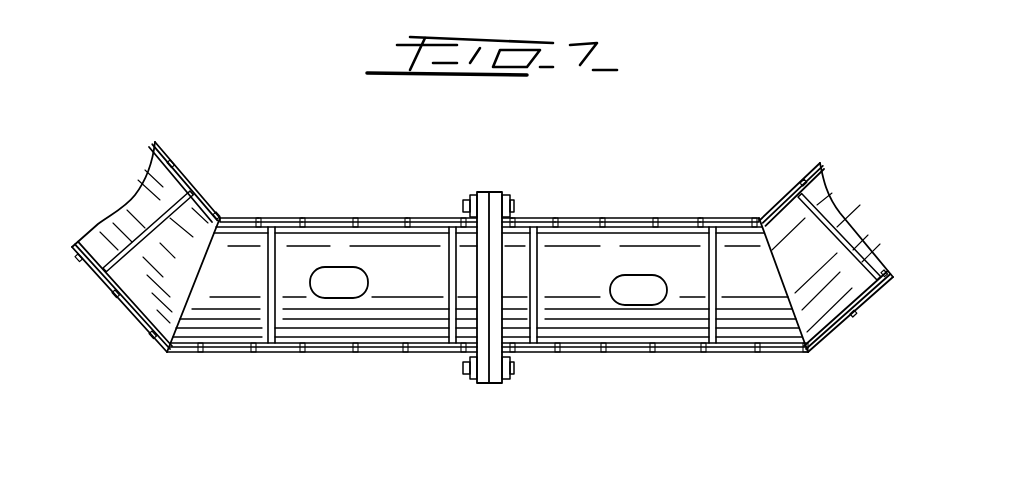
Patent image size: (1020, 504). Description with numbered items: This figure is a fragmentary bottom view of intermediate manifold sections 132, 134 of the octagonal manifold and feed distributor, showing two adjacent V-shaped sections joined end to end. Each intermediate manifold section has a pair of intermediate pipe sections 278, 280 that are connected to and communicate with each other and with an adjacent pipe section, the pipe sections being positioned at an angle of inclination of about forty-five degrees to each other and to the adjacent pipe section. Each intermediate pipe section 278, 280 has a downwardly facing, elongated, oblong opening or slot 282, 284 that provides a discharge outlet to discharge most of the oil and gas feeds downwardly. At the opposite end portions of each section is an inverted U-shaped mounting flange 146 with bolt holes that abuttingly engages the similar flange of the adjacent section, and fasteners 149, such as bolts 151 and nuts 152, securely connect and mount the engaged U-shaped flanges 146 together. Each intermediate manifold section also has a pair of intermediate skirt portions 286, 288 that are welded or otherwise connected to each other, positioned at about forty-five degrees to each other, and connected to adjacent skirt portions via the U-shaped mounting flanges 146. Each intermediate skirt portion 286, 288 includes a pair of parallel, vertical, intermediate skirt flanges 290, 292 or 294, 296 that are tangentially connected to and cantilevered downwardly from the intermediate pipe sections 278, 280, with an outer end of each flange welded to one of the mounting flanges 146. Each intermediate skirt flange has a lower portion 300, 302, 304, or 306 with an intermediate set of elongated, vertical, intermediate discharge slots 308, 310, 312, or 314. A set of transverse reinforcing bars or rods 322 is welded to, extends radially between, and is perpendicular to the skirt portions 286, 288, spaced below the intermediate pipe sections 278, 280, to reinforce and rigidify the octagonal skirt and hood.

The intermediate manifold section 132 is at (744, 218).
The intermediate manifold section 134 is at (236, 217).
The inverted U-shaped mounting flange 146 is at (485, 192).
The fasteners 149 is at (508, 195).
The bolts 151 is at (505, 383).
The nuts 152 is at (473, 383).
The intermediate pipe section 278 is at (627, 330).
The intermediate pipe section 280 is at (323, 325).
The oblong opening or slot 282 is at (337, 267).
The oblong opening or slot 284 is at (636, 275).
The intermediate skirt portion 286 is at (743, 353).
The intermediate skirt portion 288 is at (230, 352).
The intermediate skirt flange 290 is at (413, 352).
The intermediate skirt flange 292 is at (392, 218).
The intermediate skirt flange 294 is at (587, 353).
The intermediate skirt flange 296 is at (594, 218).
The lower portion 300 is at (188, 352).
The lower portion 302 is at (214, 208).
The lower portion 304 is at (663, 353).
The lower portion 306 is at (692, 218).
The intermediate discharge slots 308 is at (300, 352).
The intermediate discharge slots 310 is at (302, 218).
The intermediate discharge slots 312 is at (557, 353).
The intermediate discharge slots 314 is at (553, 218).
The transverse reinforcing bars or rods 322 is at (272, 262).